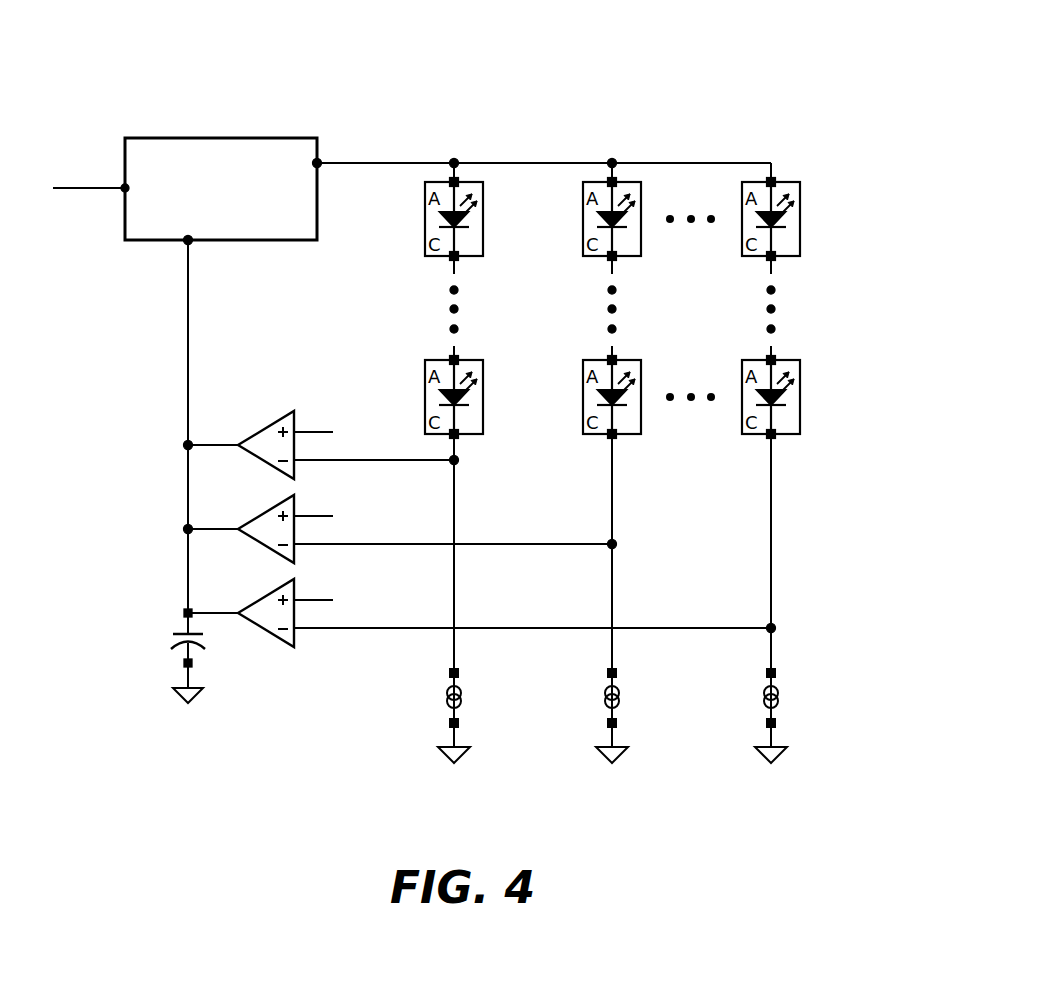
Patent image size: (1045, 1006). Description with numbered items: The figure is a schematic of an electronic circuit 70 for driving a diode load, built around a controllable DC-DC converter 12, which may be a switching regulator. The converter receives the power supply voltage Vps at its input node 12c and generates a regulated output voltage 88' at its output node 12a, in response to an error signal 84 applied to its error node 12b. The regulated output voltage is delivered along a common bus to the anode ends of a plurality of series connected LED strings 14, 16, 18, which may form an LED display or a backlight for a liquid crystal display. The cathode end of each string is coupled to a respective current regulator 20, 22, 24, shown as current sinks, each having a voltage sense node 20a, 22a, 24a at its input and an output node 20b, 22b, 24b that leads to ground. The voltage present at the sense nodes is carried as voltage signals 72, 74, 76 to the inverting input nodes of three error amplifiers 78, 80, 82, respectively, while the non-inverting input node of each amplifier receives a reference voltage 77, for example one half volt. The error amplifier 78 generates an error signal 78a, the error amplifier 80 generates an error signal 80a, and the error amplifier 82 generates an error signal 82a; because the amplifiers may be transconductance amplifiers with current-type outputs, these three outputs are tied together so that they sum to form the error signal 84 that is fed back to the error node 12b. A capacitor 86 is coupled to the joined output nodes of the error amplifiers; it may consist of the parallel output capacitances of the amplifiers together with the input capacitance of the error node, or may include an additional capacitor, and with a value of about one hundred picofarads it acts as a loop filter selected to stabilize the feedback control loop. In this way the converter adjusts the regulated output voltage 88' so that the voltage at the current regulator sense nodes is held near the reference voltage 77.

The controllable DC-DC converter 12 is at (221, 189).
The output node 12a is at (319, 161).
The error node 12b is at (190, 243).
The input node 12c is at (122, 191).
The series connected LED string 14 is at (463, 257).
The series connected LED string 16 is at (621, 257).
The series connected LED string 18 is at (787, 257).
The current regulator 20 is at (463, 692).
The voltage sense node 20a is at (450, 673).
The output node 20b is at (450, 723).
The current regulator 22 is at (621, 692).
The voltage sense node 22a is at (608, 673).
The output node 22b is at (608, 723).
The current regulator 24 is at (780, 692).
The voltage sense node 24a is at (767, 673).
The output node 24b is at (767, 723).
The electronic circuit 70 is at (440, 98).
The voltage signal 72 is at (404, 459).
The voltage signal 74 is at (535, 543).
The voltage signal 76 is at (688, 627).
The reference voltage 77 is at (312, 431).
The error amplifier 78 is at (296, 468).
The error signal 78a is at (232, 447).
The error amplifier 80 is at (296, 552).
The error signal 80a is at (232, 531).
The error amplifier 82 is at (296, 636).
The error signal 82a is at (232, 616).
The error signal 84 is at (190, 366).
The capacitor 86 is at (173, 642).
The regulated output voltage 88' is at (544, 137).